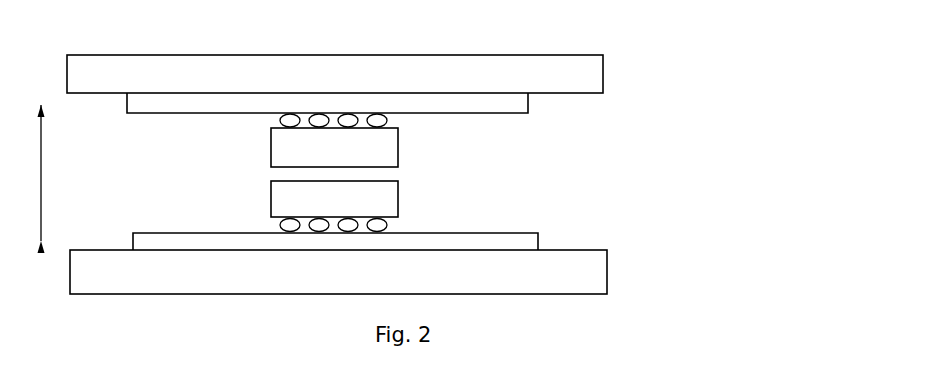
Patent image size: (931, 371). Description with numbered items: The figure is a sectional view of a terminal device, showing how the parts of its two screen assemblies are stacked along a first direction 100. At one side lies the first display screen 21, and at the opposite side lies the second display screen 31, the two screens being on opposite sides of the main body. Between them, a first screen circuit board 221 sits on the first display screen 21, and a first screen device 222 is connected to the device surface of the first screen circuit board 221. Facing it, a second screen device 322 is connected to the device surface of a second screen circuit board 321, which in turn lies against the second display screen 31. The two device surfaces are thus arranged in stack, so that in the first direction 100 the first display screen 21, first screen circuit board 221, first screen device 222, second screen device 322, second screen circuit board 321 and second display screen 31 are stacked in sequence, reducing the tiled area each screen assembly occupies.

The second display screen 31 is at (609, 68).
The second screen circuit board 321 is at (531, 106).
The second screen device 322 is at (413, 149).
The first screen device 222 is at (413, 201).
The first screen circuit board 221 is at (540, 241).
The first display screen 21 is at (608, 276).
The first direction 100 is at (22, 173).